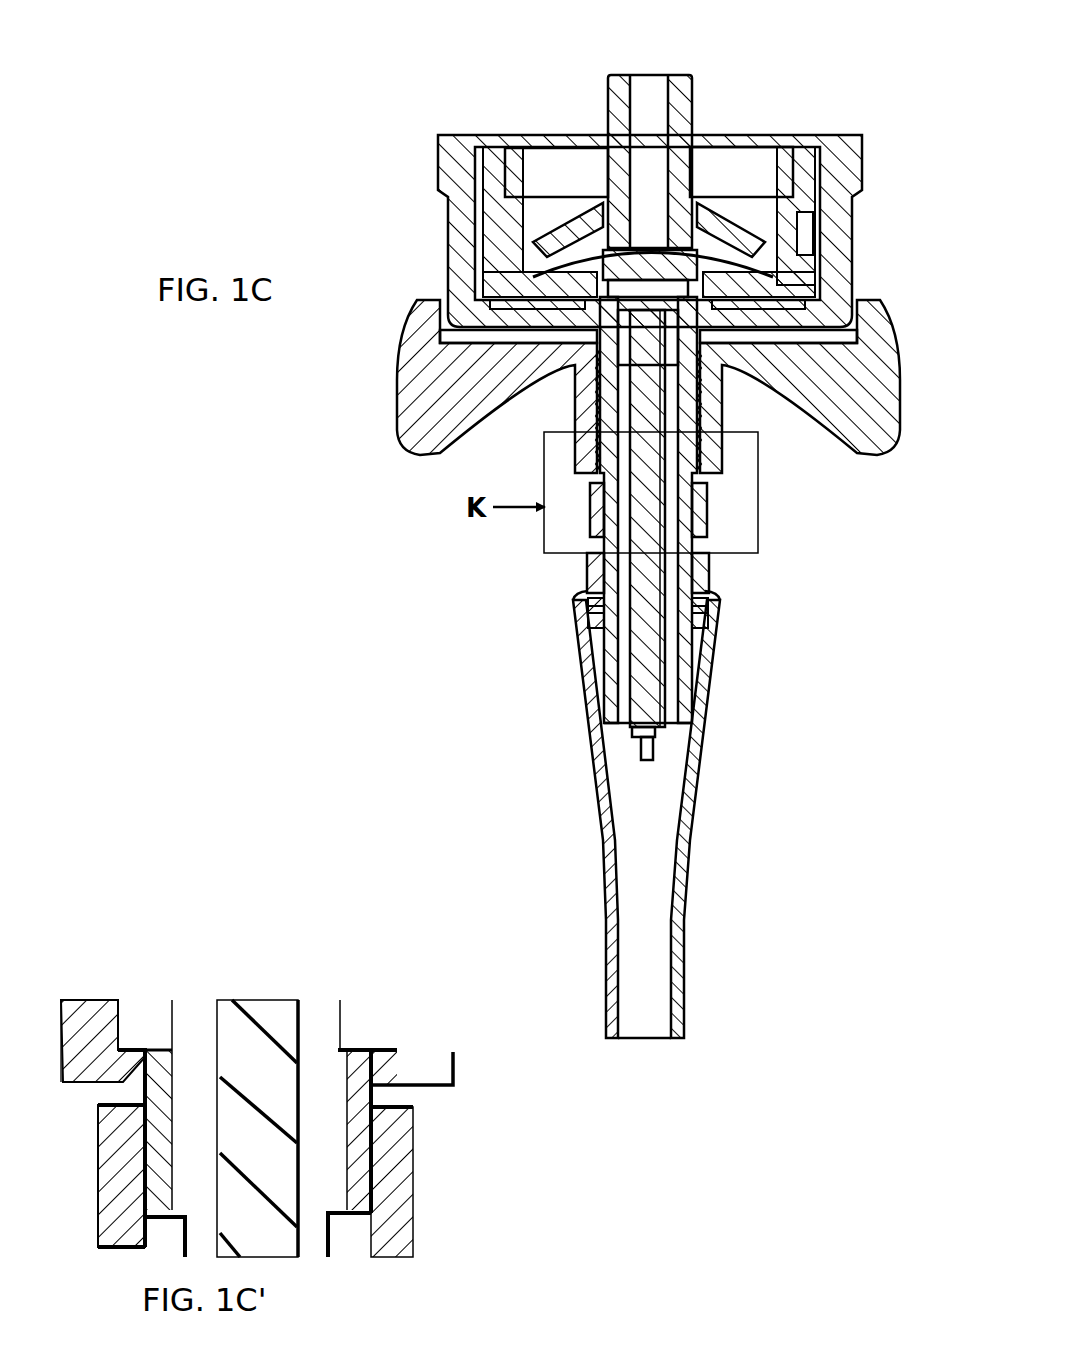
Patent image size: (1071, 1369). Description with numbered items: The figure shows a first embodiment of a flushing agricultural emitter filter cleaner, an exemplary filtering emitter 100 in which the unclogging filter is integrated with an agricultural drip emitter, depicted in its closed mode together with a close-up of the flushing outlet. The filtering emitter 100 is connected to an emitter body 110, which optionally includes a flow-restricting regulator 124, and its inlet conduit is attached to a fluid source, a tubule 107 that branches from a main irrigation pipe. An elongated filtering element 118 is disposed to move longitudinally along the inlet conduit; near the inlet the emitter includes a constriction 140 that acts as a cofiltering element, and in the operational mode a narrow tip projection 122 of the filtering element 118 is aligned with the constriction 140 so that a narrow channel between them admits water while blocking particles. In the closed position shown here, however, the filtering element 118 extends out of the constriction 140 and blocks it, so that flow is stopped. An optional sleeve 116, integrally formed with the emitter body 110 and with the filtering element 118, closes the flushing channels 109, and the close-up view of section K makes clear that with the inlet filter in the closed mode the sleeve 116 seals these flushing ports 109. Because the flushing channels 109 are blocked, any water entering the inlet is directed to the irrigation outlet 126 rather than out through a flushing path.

In FIG. 1C, the filtering emitter 100 is at (345, 72).
In FIG. 1C, the tubule 107 is at (602, 823).
In FIG. 1C', the flushing channel 109 is at (110, 1093).
In FIG. 1C, the emitter body 110 is at (438, 137).
In FIG. 1C', the sleeve 116 is at (358, 1178).
In FIG. 1C, the filtering element 118 is at (648, 673).
In FIG. 1C, the narrow tip projection 122 is at (643, 763).
In FIG. 1C, the flow-restricting regulator 124 is at (683, 252).
In FIG. 1C, the irrigation outlet 126 is at (620, 117).
In FIG. 1C, the constriction 140 is at (608, 720).